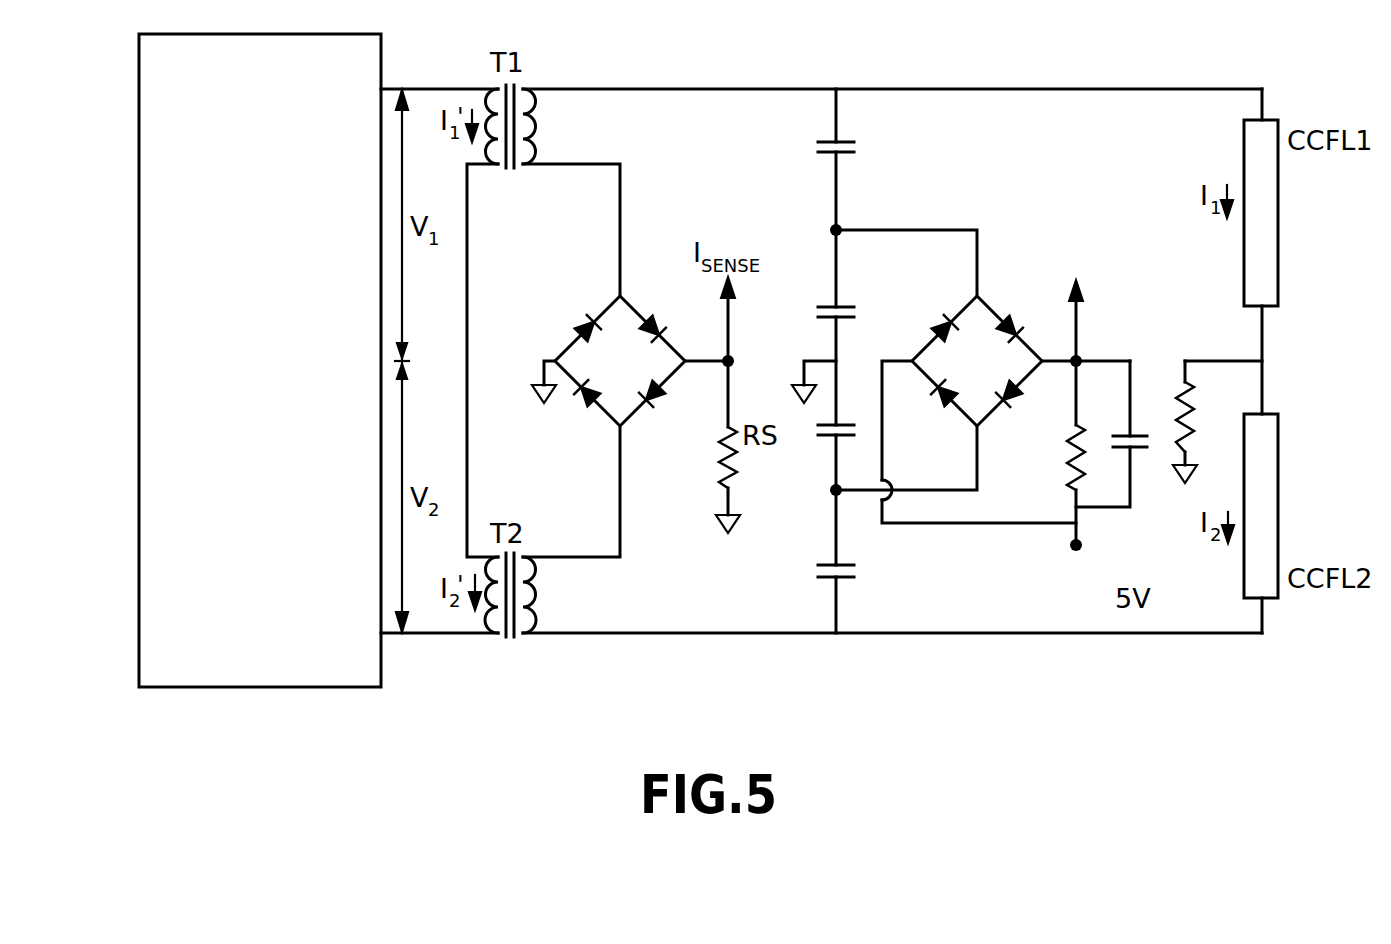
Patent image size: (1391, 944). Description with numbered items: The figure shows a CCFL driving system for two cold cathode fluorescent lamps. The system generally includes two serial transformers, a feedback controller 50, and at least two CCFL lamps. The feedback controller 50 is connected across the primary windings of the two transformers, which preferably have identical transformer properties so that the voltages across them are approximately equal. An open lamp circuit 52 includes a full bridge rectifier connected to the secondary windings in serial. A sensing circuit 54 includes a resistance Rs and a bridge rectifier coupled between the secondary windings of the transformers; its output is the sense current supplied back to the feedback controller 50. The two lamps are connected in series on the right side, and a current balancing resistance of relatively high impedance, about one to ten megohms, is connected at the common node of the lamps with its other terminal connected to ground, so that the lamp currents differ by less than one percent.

The feedback controller 50 is at (139, 187).
The open lamp circuit 52 is at (930, 309).
The sensing circuit 54 is at (566, 309).